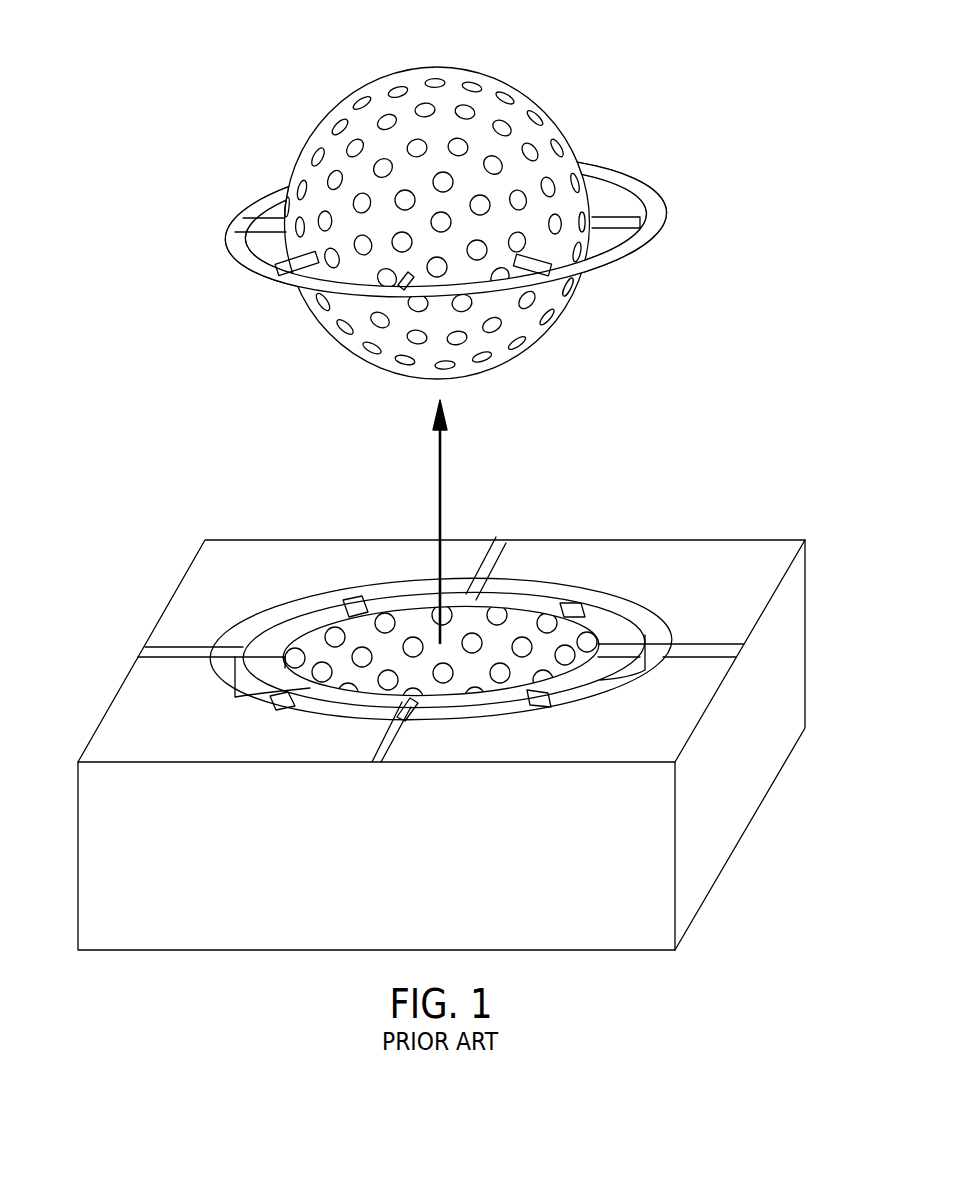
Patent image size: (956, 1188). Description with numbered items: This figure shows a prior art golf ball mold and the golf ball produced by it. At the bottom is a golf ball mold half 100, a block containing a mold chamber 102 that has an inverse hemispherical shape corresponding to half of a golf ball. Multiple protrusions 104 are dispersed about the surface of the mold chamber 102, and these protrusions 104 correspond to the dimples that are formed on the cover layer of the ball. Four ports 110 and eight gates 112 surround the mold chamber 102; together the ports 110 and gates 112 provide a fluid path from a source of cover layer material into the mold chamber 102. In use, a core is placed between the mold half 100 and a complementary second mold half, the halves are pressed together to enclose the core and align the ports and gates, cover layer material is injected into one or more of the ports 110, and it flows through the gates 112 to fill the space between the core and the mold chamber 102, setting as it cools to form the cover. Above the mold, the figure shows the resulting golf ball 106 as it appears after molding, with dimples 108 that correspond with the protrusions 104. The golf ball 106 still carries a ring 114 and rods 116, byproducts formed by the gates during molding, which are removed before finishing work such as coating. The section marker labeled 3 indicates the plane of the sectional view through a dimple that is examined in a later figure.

The golf ball mold half 100 is at (702, 499).
The mold chamber 102 is at (440, 592).
The protrusions 104 is at (441, 656).
The golf ball 106 is at (443, 189).
The dimples 108 is at (386, 117).
The ports 110 is at (503, 547).
The gates 112 is at (353, 600).
The ring 114 is at (648, 200).
The rods 116 is at (218, 236).
The section line 3- 3 is at (92, 696).